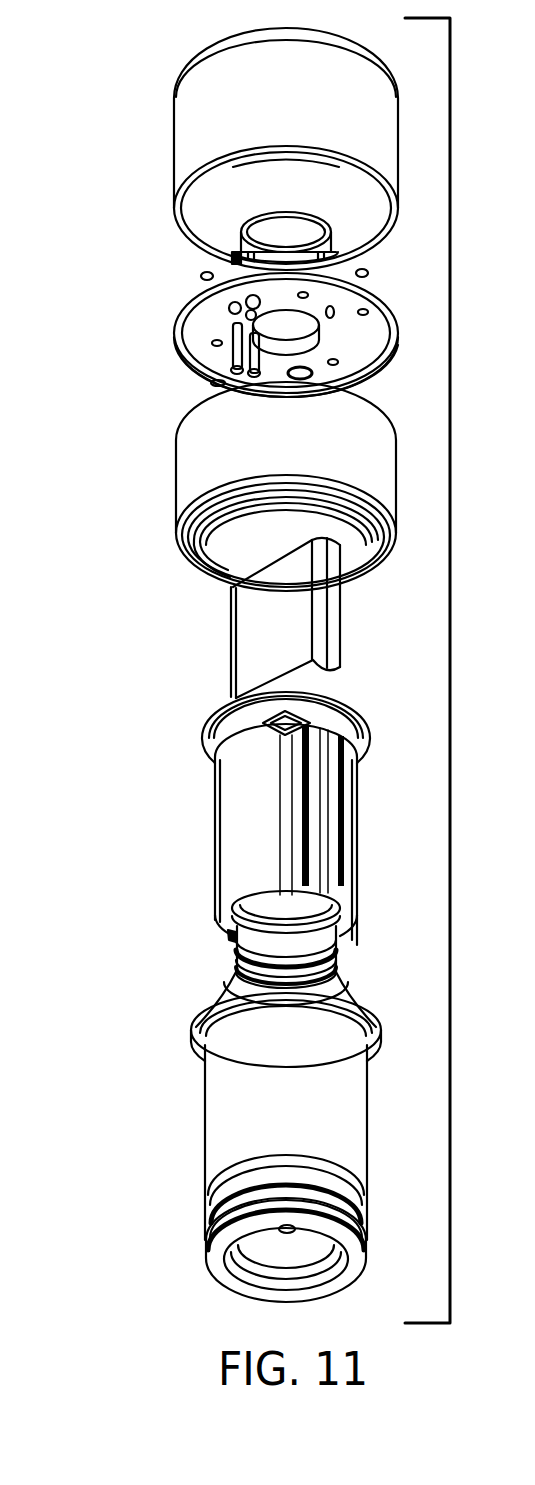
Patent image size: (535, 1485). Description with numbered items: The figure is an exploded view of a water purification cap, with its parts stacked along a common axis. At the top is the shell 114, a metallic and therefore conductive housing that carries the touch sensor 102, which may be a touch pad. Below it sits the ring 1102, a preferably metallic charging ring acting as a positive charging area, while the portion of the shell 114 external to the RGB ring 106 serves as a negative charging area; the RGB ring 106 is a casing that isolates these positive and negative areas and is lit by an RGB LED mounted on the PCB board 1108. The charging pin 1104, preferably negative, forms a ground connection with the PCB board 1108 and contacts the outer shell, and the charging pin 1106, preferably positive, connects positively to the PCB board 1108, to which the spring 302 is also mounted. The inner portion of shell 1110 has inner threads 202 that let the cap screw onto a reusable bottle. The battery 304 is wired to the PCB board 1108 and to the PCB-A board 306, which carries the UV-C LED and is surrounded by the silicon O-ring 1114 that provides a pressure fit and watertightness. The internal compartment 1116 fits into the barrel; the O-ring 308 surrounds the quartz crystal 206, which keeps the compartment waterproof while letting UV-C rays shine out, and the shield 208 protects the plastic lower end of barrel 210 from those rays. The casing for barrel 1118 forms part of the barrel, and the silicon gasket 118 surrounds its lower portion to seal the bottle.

The shell 114 is at (174, 133).
The touch sensor 102 is at (243, 243).
The ring 1102 is at (232, 257).
The RGB ring 106 is at (178, 318).
The charging pin 1104 is at (230, 349).
The charging pin 1106 is at (233, 356).
The PCB board 1108 is at (216, 384).
The spring 302 is at (345, 385).
The inner portion of shell 1110 is at (177, 481).
The inner threads 202 is at (216, 558).
The battery 304 is at (231, 648).
The PCB-A board 306 is at (252, 722).
The O-ring 1114 is at (206, 744).
The internal compartment 1116 is at (346, 818).
The O-ring 308 is at (231, 936).
The quartz crystal 206 is at (238, 966).
The shield 208 is at (332, 990).
The casing for barrel 1118 is at (205, 1115).
The gasket 118 is at (362, 1262).
The lower end of barrel 210 is at (240, 1240).